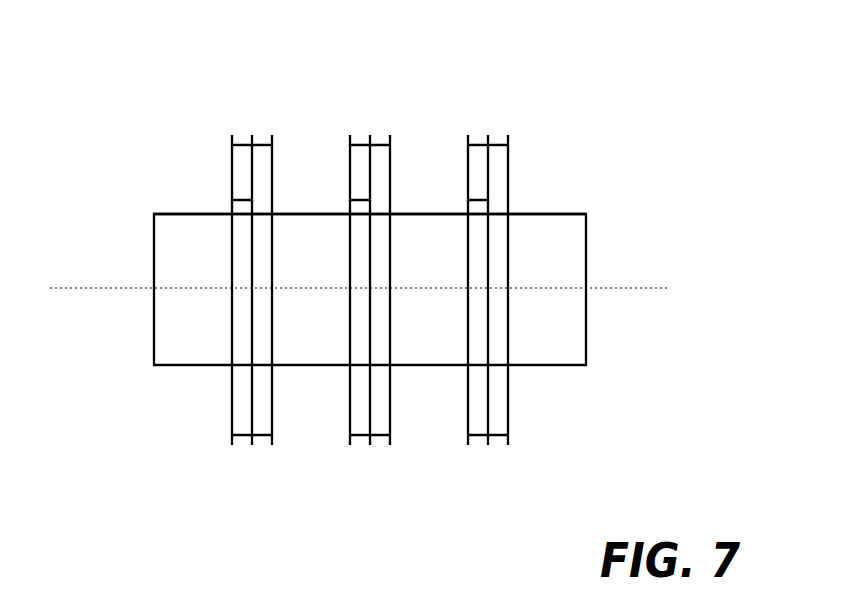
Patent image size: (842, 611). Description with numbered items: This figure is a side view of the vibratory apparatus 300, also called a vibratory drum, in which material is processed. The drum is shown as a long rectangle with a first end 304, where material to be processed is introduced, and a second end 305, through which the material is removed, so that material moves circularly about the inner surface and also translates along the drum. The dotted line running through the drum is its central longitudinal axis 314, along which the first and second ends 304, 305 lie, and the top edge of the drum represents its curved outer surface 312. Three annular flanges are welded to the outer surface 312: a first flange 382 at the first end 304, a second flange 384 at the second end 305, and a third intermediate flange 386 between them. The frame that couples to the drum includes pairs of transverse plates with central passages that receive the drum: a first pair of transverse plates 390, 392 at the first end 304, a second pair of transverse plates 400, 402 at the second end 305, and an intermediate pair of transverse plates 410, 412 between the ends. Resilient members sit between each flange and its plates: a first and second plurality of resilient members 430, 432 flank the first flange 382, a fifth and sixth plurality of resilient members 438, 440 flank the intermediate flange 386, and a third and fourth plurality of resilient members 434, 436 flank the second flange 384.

The vibratory apparatus 300 is at (605, 131).
The first end 304 is at (172, 262).
The second end 305 is at (573, 262).
The curved outer surface 312 is at (195, 214).
The central longitudinal axis 314 is at (635, 288).
The first flange 382 is at (252, 290).
The second flange 384 is at (487, 290).
The third intermediate flange 386 is at (370, 272).
The transverse plate 390 is at (232, 445).
The transverse plate 392 is at (272, 445).
The transverse plate 400 is at (468, 445).
The transverse plate 402 is at (508, 445).
The transverse plate 410 is at (350, 445).
The transverse plate 412 is at (390, 445).
The first plurality of resilient members 430 is at (237, 138).
The second plurality of resilient members 432 is at (268, 138).
The third plurality of resilient members 434 is at (472, 138).
The fourth plurality of resilient members 436 is at (505, 138).
The fifth plurality of resilient members 438 is at (357, 138).
The sixth plurality of resilient members 440 is at (383, 138).